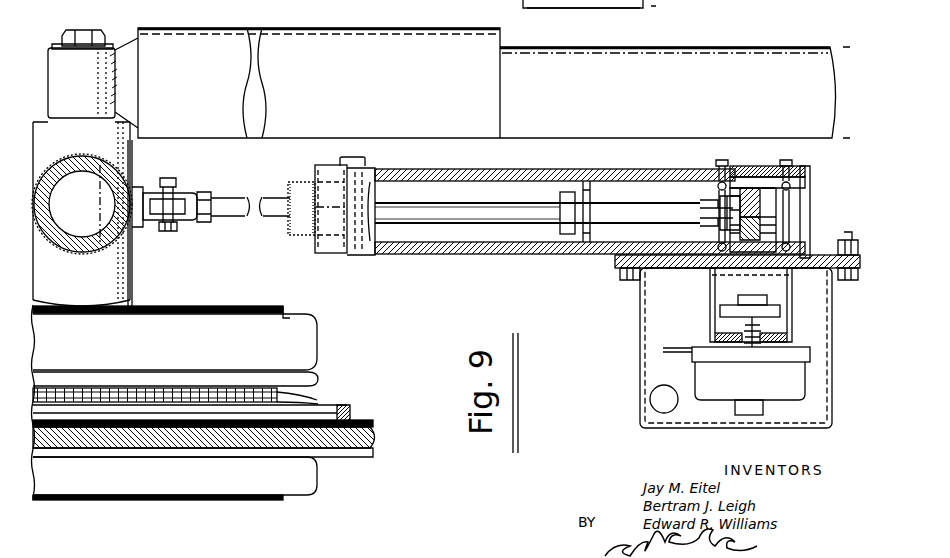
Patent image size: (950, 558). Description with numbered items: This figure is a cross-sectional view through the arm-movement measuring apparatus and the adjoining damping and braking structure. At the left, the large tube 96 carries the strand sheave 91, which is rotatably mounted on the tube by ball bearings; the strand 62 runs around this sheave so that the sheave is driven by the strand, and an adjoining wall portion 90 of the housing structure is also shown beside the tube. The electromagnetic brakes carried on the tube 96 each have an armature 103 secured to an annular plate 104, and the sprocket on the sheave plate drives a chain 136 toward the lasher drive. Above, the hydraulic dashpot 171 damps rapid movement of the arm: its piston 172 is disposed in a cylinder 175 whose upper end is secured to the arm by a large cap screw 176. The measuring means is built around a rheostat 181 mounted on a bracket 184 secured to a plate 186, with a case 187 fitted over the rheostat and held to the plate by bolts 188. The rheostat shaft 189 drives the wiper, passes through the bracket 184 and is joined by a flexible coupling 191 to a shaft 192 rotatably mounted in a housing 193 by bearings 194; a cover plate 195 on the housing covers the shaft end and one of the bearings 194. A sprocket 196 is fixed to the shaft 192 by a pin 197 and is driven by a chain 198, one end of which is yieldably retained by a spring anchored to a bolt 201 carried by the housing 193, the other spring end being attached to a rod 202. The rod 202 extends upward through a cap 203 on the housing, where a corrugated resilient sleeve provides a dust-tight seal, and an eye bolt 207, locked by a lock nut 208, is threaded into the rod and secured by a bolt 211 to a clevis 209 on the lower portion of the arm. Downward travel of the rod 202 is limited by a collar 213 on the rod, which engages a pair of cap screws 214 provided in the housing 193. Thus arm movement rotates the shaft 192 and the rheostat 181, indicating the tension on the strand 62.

The strand 62 is at (382, 440).
The housing side wall 90 is at (137, 240).
The strand sheave 91 is at (373, 453).
The large tube 96 is at (85, 283).
The armature 103 is at (275, 352).
The annular plate 104 is at (255, 310).
The chain 136 is at (307, 400).
The hydraulic dashpot 171 is at (702, 39).
The piston 172 is at (750, 104).
The cylinder 175 is at (441, 102).
The cap screw 176 is at (82, 30).
The rheostat 181 is at (752, 397).
The bracket 184 is at (708, 313).
The plate 186 is at (617, 262).
The case 187 is at (640, 366).
The bolts 188 is at (846, 239).
The shaft 189 is at (757, 318).
The flexible coupling 191 is at (721, 305).
The shaft 192 is at (774, 197).
The housing 193 is at (531, 250).
The bearings 194 is at (762, 170).
The cover plate 195 is at (741, 170).
The sprocket 196 is at (805, 218).
The pin 197 is at (773, 224).
The chain 198 is at (720, 208).
The bolt 201 is at (363, 236).
The rod 202 is at (463, 214).
The cap 203 is at (325, 254).
The eye bolt 207 is at (175, 207).
The lock nut 208 is at (201, 192).
The clevis 209 is at (156, 186).
The bolt 211 is at (168, 231).
The collar 213 is at (565, 192).
The cap screws 214 is at (595, 195).